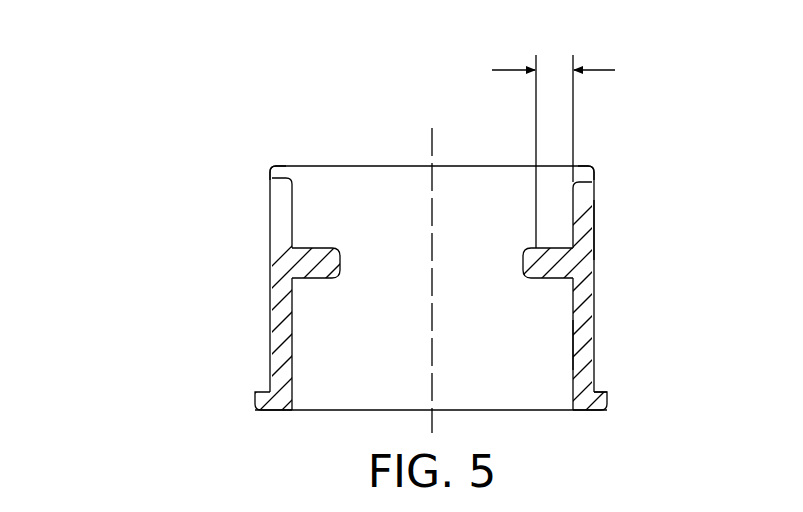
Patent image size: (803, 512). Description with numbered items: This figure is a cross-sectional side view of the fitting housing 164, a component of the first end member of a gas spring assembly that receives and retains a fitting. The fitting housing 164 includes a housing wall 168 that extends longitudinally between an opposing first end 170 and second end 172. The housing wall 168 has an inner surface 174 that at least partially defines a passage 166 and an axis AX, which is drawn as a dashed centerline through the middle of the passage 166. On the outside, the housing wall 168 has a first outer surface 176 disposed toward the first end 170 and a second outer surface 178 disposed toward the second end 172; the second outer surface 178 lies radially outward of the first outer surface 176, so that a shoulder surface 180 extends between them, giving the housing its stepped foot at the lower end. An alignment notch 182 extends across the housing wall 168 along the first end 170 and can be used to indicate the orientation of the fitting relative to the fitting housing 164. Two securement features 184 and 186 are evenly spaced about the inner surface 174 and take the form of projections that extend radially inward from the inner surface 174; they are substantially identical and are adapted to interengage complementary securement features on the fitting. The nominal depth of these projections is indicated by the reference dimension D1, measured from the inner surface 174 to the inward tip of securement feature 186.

The fitting housing 164 is at (655, 178).
The passage 166 is at (400, 215).
The housing wall 168 is at (584, 314).
The first end 170 is at (258, 170).
The second end 172 is at (252, 403).
The inner surface 174 is at (573, 348).
The first outer surface 176 is at (596, 230).
The second outer surface 178 is at (608, 400).
The shoulder surface 180 is at (600, 392).
The alignment notch 182 is at (280, 170).
The securement feature 184 is at (312, 278).
The securement feature 186 is at (549, 280).
The axis AX is at (432, 145).
The reference dimension D1 is at (605, 70).